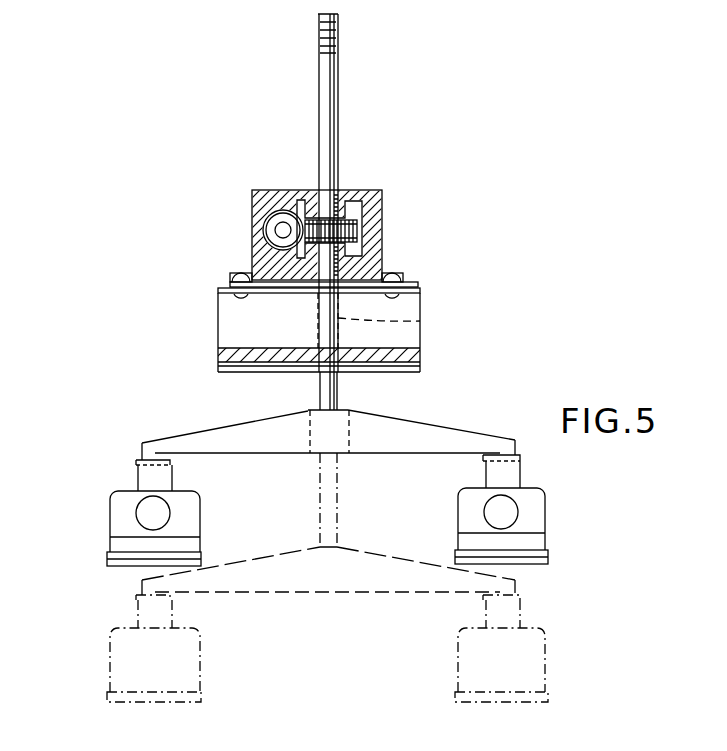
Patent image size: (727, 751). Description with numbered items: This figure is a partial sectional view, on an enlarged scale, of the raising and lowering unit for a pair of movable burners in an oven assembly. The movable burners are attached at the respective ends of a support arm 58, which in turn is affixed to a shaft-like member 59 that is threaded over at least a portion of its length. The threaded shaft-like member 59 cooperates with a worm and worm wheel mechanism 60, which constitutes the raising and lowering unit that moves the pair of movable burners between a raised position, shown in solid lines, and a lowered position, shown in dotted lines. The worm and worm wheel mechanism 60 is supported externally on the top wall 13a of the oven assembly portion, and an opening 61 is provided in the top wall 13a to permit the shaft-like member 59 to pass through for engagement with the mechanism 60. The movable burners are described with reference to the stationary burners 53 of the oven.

The top wall 13a is at (412, 284).
The stationary burners 53 is at (109, 513).
The support arm 58 is at (443, 428).
The shaft-like member 59 is at (340, 388).
The worm and worm wheel mechanism 60 is at (386, 213).
The opening 61 is at (420, 318).